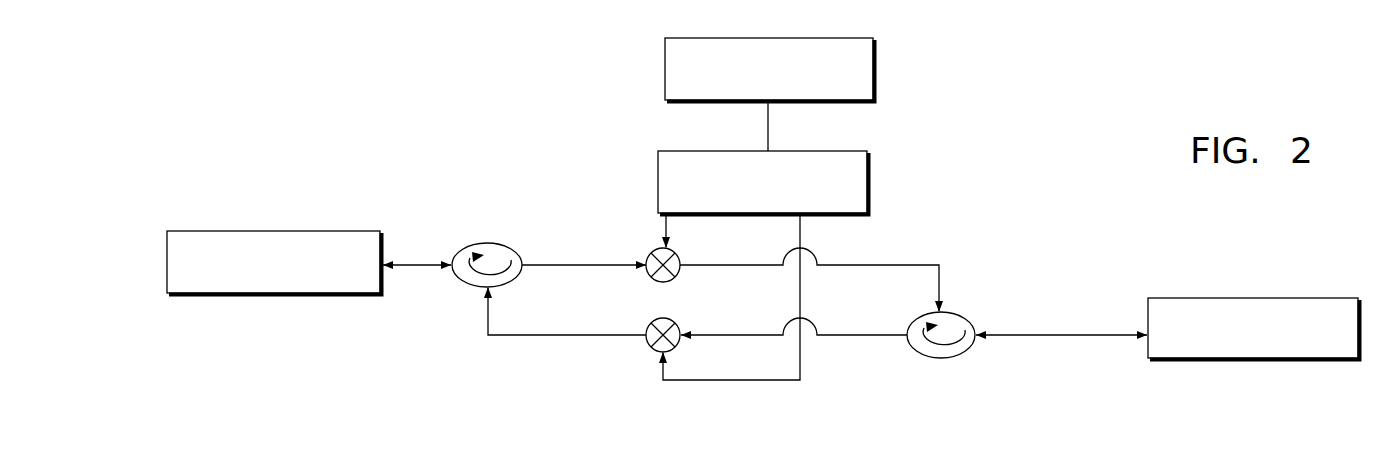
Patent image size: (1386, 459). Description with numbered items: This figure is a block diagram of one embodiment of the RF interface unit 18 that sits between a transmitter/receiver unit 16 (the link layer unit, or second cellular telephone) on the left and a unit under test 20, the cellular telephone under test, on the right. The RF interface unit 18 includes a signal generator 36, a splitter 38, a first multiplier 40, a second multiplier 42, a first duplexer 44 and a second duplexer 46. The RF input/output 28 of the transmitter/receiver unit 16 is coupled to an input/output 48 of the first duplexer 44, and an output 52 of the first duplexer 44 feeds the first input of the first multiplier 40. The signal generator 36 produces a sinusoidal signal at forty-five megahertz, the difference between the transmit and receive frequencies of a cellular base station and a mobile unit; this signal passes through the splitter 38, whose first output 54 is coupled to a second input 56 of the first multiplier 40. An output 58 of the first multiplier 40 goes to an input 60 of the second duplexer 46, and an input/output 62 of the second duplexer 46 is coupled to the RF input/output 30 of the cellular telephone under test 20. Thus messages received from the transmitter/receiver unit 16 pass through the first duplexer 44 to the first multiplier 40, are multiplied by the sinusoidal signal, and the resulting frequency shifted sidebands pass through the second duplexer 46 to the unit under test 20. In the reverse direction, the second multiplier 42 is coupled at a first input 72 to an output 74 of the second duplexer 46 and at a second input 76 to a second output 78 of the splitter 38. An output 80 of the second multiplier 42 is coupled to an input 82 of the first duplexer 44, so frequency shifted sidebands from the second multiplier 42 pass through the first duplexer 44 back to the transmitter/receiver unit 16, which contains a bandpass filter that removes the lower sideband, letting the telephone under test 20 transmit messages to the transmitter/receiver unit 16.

The transmitter/receiver unit 16 is at (280, 231).
The RF interface unit 18 is at (1040, 104).
The unit under test 20 is at (1235, 298).
The RF input/output of the transmitter/receiver unit 28 is at (381, 262).
The RF input/output of the cellular telephone under test 30 is at (1142, 333).
The signal generator 36 is at (875, 61).
The splitter 38 is at (868, 180).
The first multiplier 40 is at (676, 257).
The second multiplier 42 is at (650, 322).
The first duplexer 44 is at (496, 246).
The second duplexer 46 is at (955, 315).
The input/output of the first duplexer 48 is at (452, 266).
The output of the first duplexer 52 is at (522, 263).
The first output of the splitter 54 is at (660, 213).
The second input of the first multiplier 56 is at (668, 244).
The output of the first multiplier 58 is at (677, 272).
The input of the second duplexer 60 is at (936, 312).
The input/output of the second duplexer 62 is at (976, 338).
The first input of the second multiplier 72 is at (690, 330).
The output of the second duplexer 74 is at (908, 340).
The second input of the second multiplier 76 is at (672, 347).
The second output of the splitter 78 is at (803, 217).
The output of the second multiplier 80 is at (648, 340).
The input of the first duplexer 82 is at (487, 288).